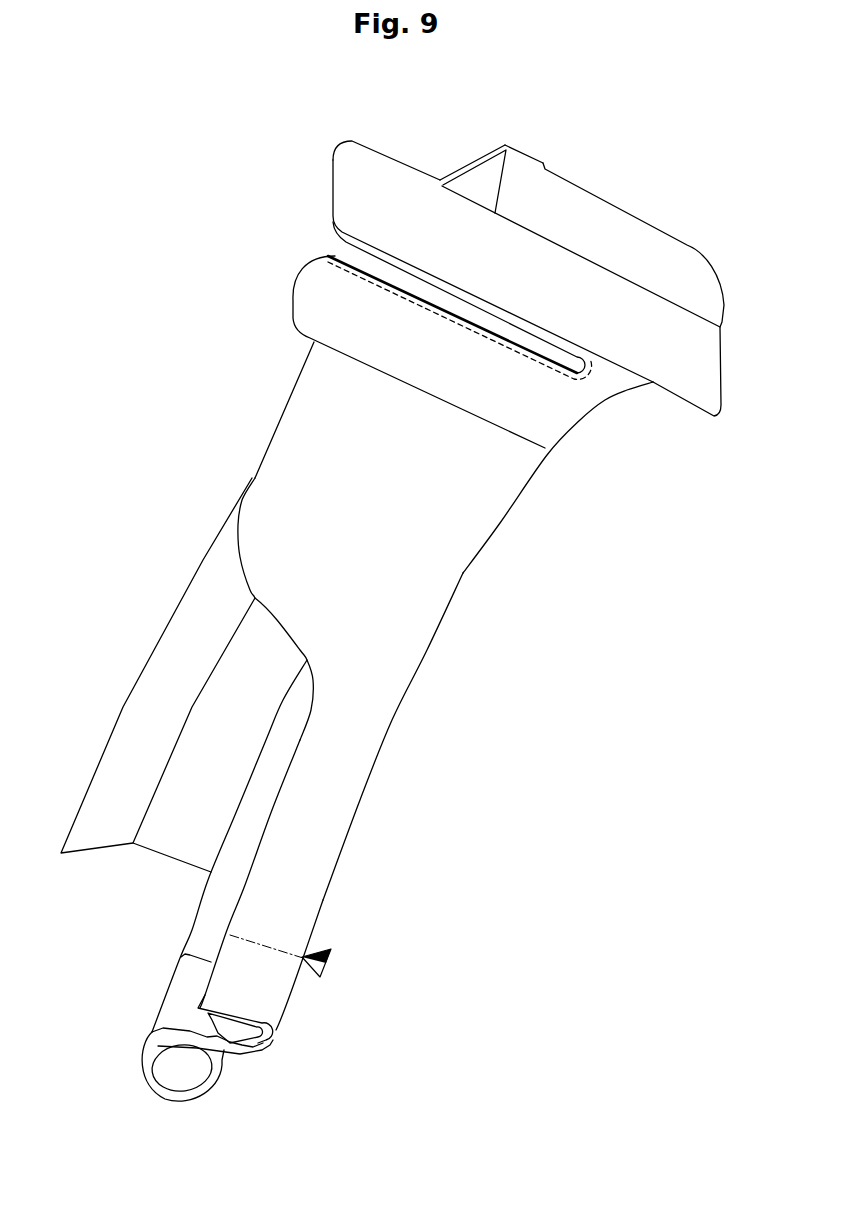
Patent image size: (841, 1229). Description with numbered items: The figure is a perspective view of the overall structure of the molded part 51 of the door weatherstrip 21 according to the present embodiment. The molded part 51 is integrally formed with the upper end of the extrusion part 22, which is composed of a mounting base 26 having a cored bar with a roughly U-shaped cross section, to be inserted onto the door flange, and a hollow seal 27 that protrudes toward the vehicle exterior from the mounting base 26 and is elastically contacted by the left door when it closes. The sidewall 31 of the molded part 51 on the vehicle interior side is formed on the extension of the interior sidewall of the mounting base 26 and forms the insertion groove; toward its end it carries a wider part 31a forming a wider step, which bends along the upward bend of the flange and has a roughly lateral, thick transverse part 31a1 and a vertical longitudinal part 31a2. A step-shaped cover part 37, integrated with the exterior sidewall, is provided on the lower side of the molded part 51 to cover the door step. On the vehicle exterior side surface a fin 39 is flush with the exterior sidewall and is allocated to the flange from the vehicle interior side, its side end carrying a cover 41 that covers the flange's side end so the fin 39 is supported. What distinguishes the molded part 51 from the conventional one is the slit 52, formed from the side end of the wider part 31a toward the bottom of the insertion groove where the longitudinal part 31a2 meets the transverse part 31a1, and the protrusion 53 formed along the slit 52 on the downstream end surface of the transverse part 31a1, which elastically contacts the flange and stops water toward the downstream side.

The door weatherstrip 21 is at (245, 1062).
The extrusion part 22 is at (172, 990).
The mounting base 26 is at (285, 989).
The hollow seal 27 is at (142, 1064).
The sidewall 31 is at (463, 573).
The wider part 31a is at (263, 482).
The transverse part 31a1 is at (298, 292).
The longitudinal part 31a2 is at (396, 178).
The cover part 37 is at (172, 637).
The fin 39 is at (620, 220).
The cover 41 is at (522, 158).
The molded part 51 is at (428, 652).
The slit 52 is at (472, 312).
The protrusion 53 is at (493, 338).